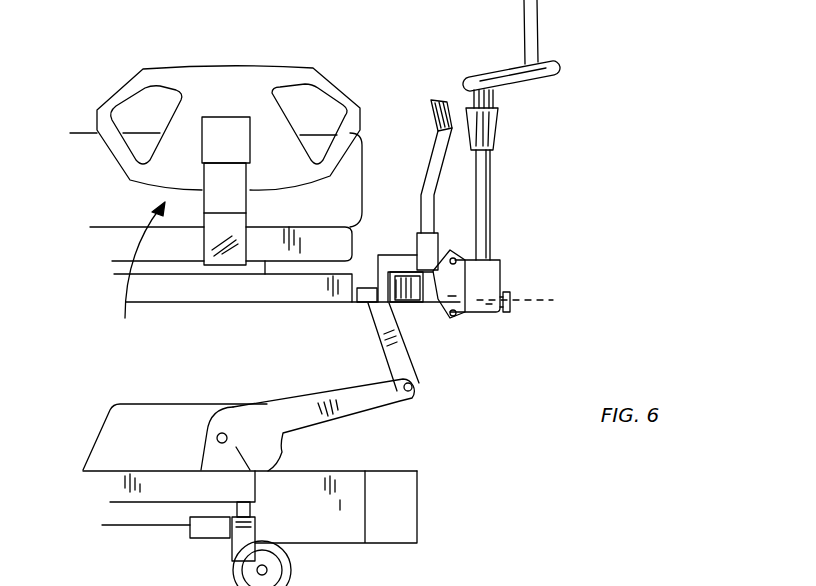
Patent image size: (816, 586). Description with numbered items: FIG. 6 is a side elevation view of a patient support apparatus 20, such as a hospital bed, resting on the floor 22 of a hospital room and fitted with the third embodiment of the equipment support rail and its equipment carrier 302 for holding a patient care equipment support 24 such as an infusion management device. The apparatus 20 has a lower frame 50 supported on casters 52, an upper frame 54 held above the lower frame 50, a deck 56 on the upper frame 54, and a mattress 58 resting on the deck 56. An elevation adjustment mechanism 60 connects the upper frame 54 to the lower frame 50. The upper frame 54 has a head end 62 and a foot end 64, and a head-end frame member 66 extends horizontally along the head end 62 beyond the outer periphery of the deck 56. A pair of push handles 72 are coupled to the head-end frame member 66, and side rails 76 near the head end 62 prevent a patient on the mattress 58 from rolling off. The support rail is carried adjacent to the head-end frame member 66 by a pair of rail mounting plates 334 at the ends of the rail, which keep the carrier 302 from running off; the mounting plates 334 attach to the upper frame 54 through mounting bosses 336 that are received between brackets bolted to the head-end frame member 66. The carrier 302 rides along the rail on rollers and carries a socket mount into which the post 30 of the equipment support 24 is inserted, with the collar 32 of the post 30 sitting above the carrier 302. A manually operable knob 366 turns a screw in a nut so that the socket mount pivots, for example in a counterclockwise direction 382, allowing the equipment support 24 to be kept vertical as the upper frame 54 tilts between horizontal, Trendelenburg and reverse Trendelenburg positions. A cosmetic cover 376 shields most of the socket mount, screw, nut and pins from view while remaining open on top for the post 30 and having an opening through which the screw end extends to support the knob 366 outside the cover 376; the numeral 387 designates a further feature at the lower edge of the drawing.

The patient support apparatus 20 is at (131, 58).
The side rails 76 is at (229, 79).
The foot end 64 is at (86, 153).
The mattress 58 is at (112, 213).
The deck 56 is at (315, 240).
The upper frame 54 is at (173, 290).
The elevation adjustment mechanism 60 is at (328, 390).
The lower frame 50 is at (150, 518).
The floor 22 is at (197, 585).
The casters 52 is at (290, 570).
The patient care equipment support 24 is at (553, 33).
The head end 62 is at (607, 112).
The collar 32 is at (497, 128).
The push handles 72 is at (433, 167).
The post 30 is at (490, 215).
The head-end frame member 66 is at (400, 260).
The equipment carrier 302 is at (513, 268).
The knob 366 is at (512, 313).
The mounting bosses 336 is at (412, 305).
The cosmetic cover 376 is at (487, 308).
The rail mounting plates 334 is at (452, 297).
The counterclockwise direction 382 is at (585, 578).
The connector 387 is at (722, 578).